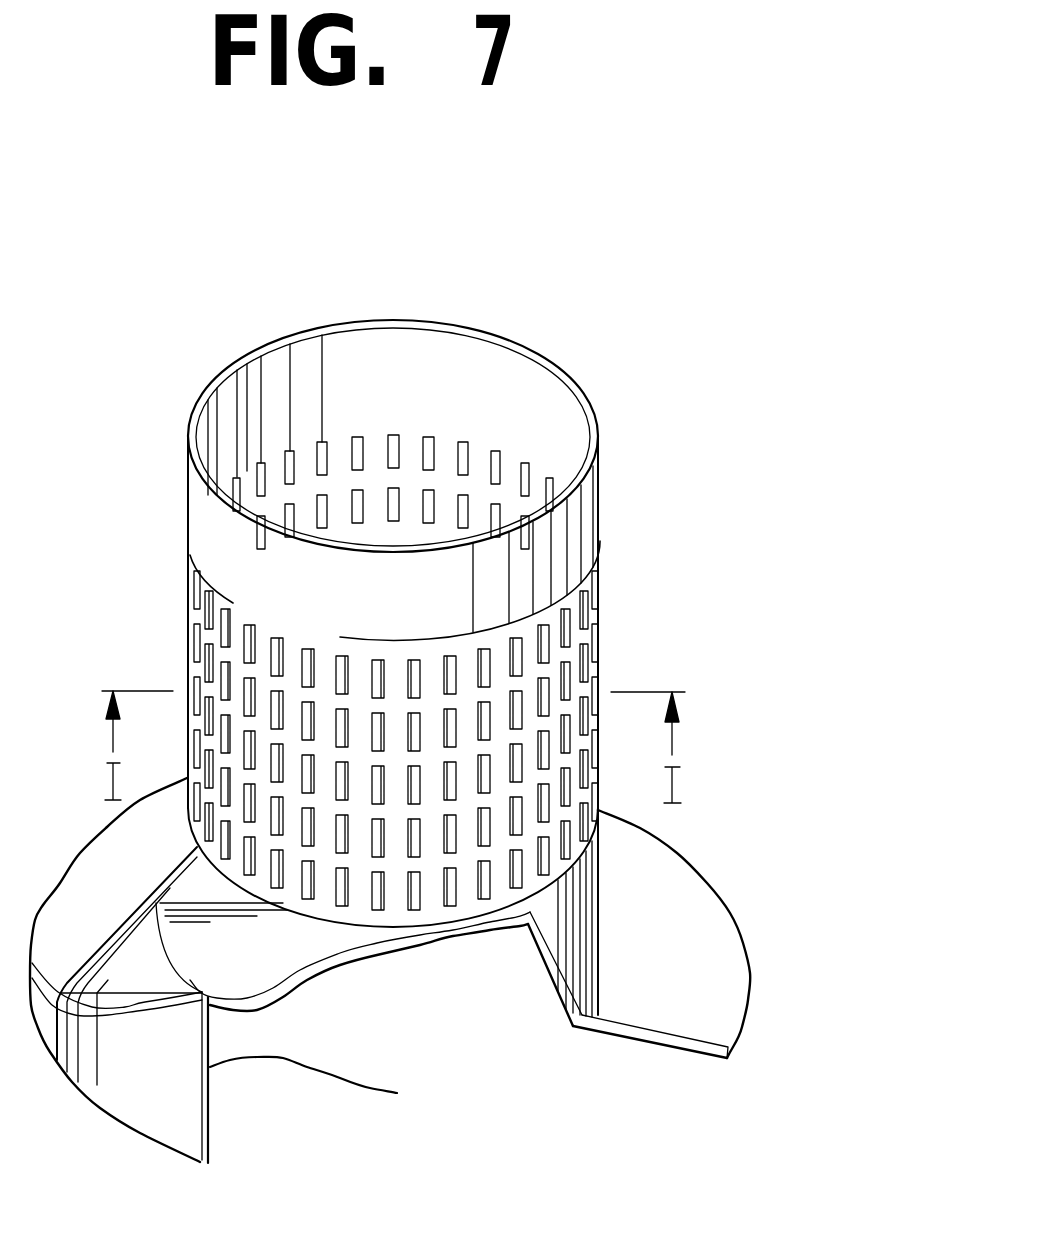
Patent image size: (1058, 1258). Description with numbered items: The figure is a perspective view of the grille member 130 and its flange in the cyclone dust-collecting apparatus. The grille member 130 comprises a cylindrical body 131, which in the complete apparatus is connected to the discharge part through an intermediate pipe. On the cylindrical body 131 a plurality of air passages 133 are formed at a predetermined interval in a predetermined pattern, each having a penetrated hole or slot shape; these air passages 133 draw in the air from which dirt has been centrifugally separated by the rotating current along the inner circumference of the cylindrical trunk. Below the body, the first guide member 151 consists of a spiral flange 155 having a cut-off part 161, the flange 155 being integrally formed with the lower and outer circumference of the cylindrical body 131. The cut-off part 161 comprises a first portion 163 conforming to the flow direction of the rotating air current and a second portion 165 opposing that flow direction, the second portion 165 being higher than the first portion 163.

The grille member 130 is at (630, 481).
The cylindrical body 131 is at (600, 528).
The air passages 133 is at (546, 636).
The first guide member 151 is at (785, 978).
The spiral flange 155 is at (668, 893).
The cut-off part 161 is at (633, 1131).
The first portion 163 is at (660, 1033).
The second portion 165 is at (387, 955).